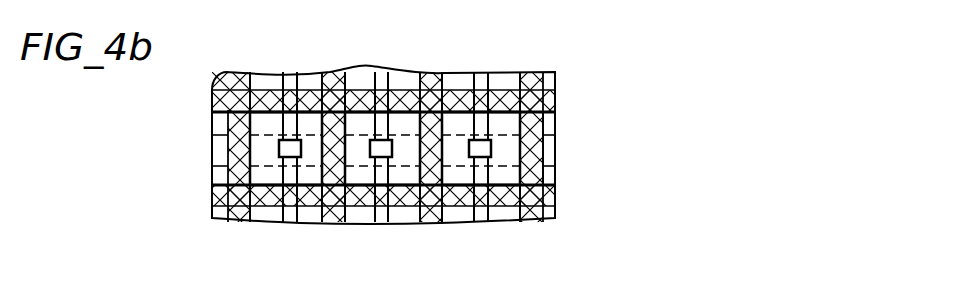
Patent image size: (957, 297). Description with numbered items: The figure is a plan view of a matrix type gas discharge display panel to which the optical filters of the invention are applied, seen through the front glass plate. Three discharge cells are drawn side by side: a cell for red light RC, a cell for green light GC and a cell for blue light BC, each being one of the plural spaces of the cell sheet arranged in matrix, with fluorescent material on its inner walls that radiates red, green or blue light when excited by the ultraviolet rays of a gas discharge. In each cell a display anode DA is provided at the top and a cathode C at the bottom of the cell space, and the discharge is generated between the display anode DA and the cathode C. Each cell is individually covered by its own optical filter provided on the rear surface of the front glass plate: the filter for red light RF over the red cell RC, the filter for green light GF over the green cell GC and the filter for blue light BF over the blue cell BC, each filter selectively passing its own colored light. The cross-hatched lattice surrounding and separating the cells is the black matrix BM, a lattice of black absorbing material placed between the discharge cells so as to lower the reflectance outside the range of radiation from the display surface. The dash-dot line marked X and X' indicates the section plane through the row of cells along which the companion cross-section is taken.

The black matrix BM is at (555, 103).
The cell for red light RC is at (268, 122).
The cell for green light GC is at (355, 122).
The cell for blue light BC is at (453, 122).
The filter for red light RF is at (310, 172).
The filter for green light GF is at (403, 178).
The filter for blue light BF is at (507, 175).
The display anode DA is at (285, 150).
The cathode C is at (512, 153).
The section line X is at (185, 138).
The section line X' is at (583, 140).